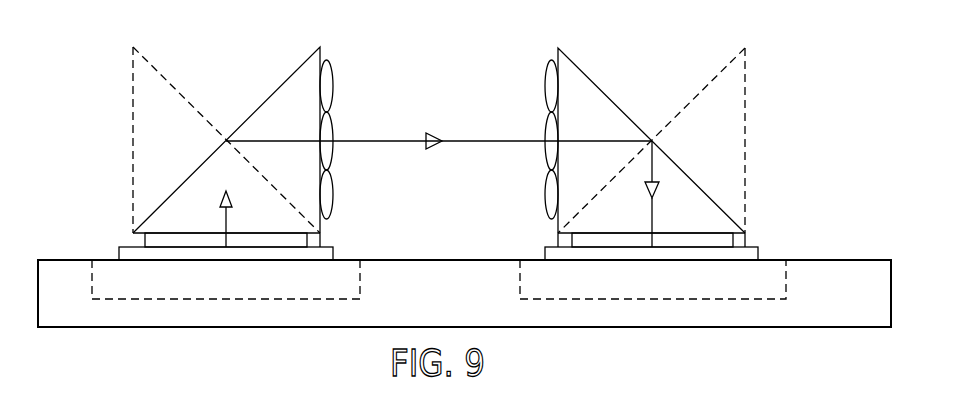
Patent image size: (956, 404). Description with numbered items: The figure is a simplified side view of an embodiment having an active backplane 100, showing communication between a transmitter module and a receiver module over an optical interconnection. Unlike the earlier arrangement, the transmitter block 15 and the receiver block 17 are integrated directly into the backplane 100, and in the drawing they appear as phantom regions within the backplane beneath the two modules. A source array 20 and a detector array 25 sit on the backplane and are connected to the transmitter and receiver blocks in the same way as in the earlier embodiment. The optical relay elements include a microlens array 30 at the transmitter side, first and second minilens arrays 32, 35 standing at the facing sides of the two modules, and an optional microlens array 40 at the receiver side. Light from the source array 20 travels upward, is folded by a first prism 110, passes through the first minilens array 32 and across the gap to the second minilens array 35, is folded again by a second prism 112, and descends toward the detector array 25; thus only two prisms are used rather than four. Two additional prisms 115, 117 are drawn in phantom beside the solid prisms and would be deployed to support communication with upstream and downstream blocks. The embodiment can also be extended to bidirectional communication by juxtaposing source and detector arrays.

The active backplane 100 is at (845, 261).
The transmitter block 15 is at (362, 268).
The receiver block 17 is at (788, 268).
The source array 20 is at (318, 246).
The detector array 25 is at (748, 246).
The microlens array 30 is at (143, 238).
The optional microlens array 40 is at (560, 238).
The first prism 110 is at (252, 112).
The second prism 112 is at (600, 88).
The additional prism 115 is at (145, 60).
The additional prism 117 is at (734, 61).
The first minilens array 32 is at (330, 63).
The second minilens array 35 is at (556, 57).